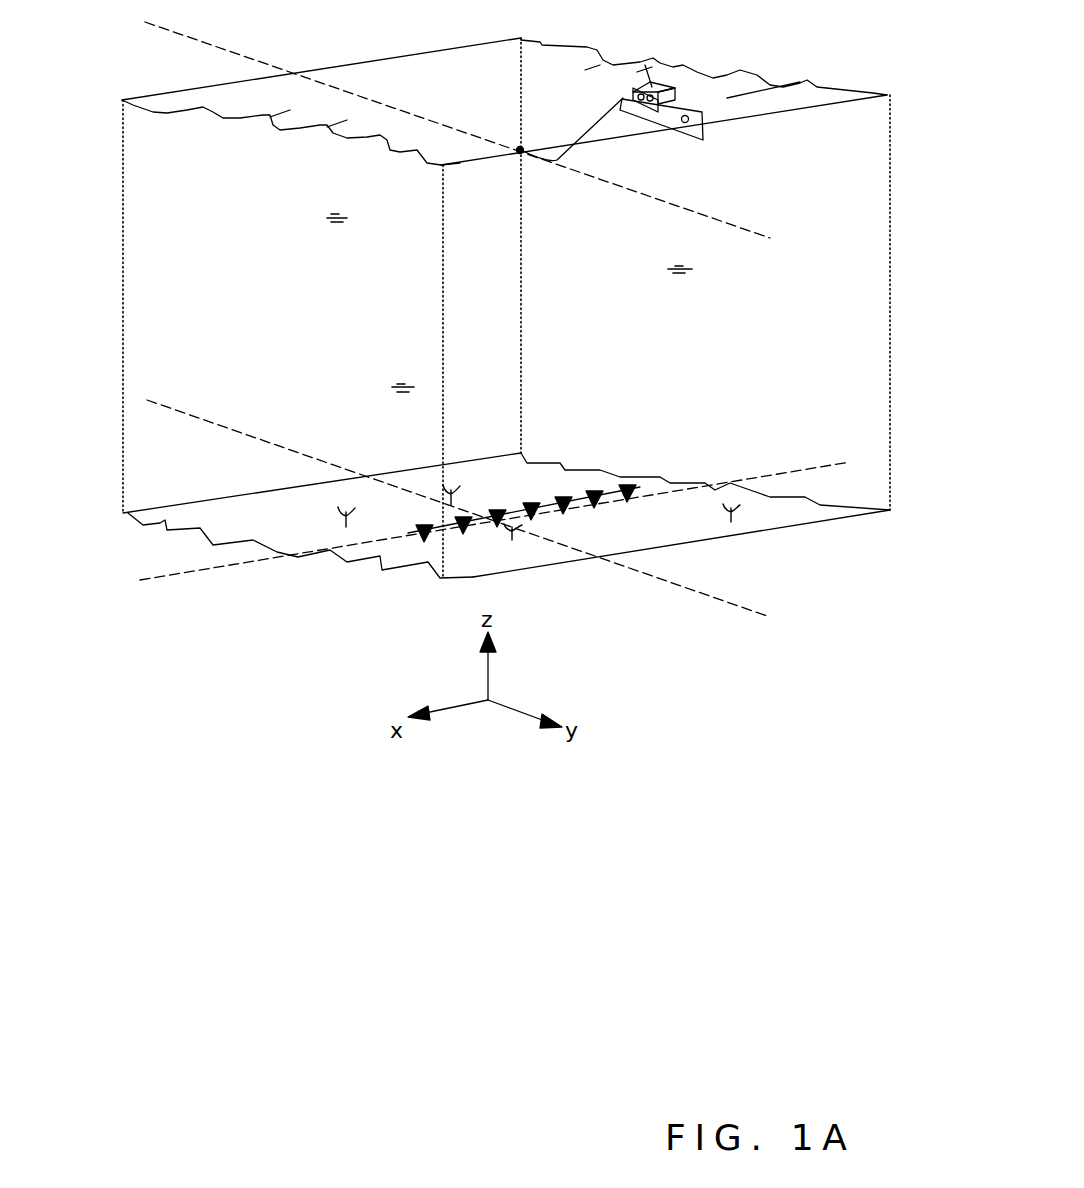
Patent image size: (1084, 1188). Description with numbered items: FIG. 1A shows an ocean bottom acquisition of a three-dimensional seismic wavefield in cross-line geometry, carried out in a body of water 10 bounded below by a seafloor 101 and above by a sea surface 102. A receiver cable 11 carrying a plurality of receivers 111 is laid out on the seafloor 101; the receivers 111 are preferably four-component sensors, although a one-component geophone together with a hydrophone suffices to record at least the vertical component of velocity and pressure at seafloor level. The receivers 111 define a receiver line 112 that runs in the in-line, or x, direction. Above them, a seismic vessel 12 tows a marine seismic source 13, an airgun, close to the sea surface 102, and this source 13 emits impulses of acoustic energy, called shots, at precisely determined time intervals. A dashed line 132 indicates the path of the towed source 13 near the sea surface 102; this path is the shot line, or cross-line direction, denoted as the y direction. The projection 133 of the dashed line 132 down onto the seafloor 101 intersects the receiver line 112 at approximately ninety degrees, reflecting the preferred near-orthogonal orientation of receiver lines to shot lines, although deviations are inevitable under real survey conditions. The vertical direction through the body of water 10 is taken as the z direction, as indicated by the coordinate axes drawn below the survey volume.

The body of water 10 is at (818, 343).
The seafloor 101 is at (165, 520).
The sea surface 102 is at (803, 82).
The receiver cable 11 is at (538, 504).
The receivers 111 is at (567, 494).
The receiver line 112 is at (790, 470).
The seismic vessel 12 is at (698, 140).
The marine seismic source 13 is at (523, 147).
The dashed line 132 is at (752, 232).
The projection 133 is at (745, 610).